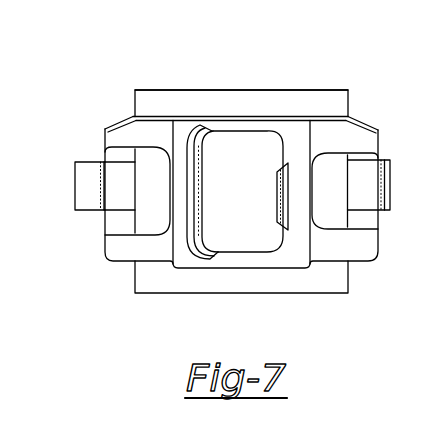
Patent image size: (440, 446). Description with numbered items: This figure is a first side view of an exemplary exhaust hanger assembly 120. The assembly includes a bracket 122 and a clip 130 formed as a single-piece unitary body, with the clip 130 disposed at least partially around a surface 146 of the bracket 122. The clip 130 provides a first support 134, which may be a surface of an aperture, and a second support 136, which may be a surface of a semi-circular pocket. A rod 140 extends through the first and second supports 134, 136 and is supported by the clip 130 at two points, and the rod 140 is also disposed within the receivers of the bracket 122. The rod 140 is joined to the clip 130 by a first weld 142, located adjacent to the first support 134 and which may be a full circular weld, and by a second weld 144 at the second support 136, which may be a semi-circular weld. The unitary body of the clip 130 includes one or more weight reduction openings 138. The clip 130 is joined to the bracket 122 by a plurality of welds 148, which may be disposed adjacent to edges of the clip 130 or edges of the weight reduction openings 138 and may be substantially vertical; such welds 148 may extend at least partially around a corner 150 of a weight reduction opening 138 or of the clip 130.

The exhaust hanger assembly 120 is at (273, 56).
The bracket 122 is at (192, 100).
The clip 130 is at (357, 246).
The first support 134 is at (102, 165).
The second support 136 is at (383, 162).
The weight reduction opening 138 is at (122, 222).
The rod 140 is at (80, 178).
The first weld 142 is at (102, 202).
The second weld 144 is at (382, 200).
The surface 146 is at (310, 100).
The welds 148 is at (277, 187).
The corner 150 is at (197, 138).